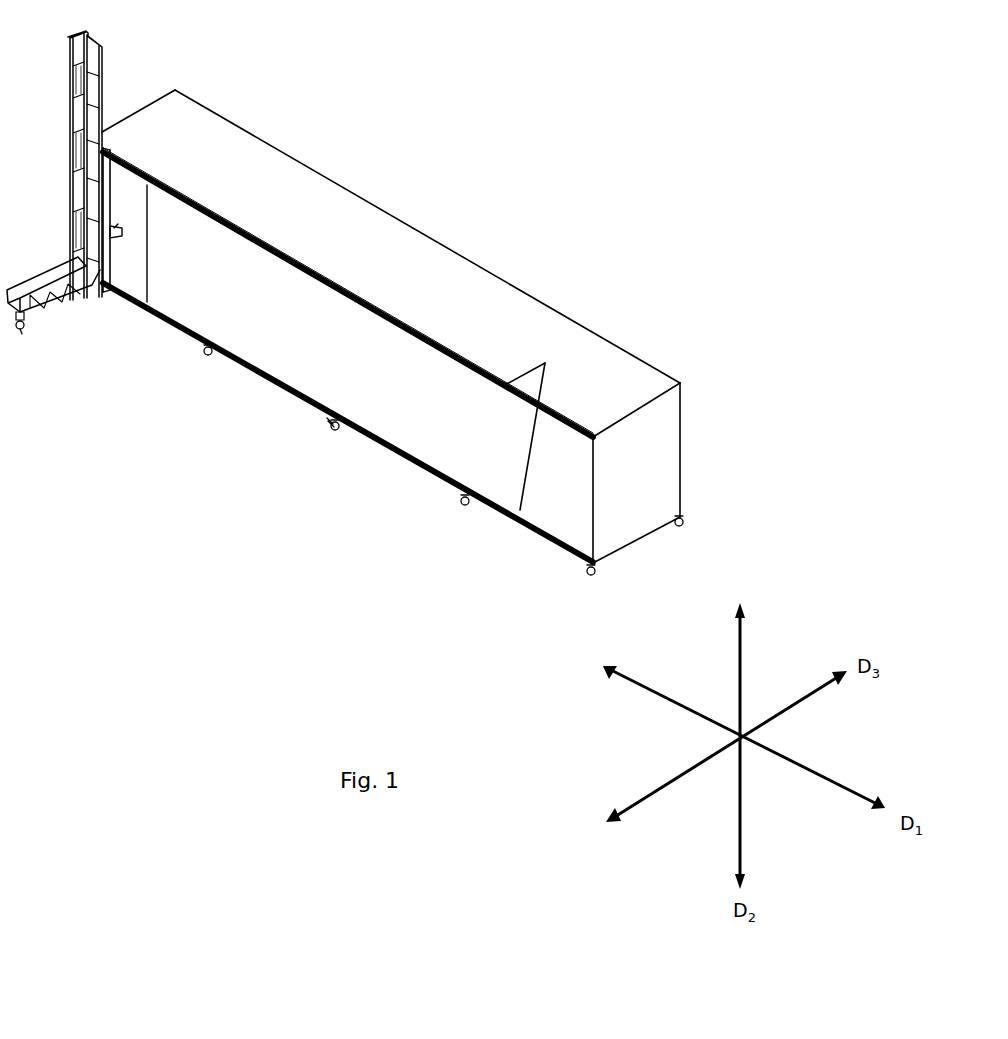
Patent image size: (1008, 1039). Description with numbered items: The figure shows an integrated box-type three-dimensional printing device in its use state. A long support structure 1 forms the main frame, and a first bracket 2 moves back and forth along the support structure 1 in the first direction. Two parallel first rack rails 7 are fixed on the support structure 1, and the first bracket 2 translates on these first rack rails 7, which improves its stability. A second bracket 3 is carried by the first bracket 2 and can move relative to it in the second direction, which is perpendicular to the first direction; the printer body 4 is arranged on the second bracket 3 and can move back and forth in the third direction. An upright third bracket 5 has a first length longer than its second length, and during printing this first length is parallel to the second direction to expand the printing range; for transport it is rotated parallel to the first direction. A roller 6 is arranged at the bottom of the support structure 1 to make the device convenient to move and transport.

The support structure 1 is at (385, 265).
The first bracket 2 is at (105, 182).
The second bracket 3 is at (52, 288).
The printer body 4 is at (21, 331).
The third bracket 5 is at (100, 75).
The roller 6 is at (340, 428).
The first rack rail 7 is at (545, 363).